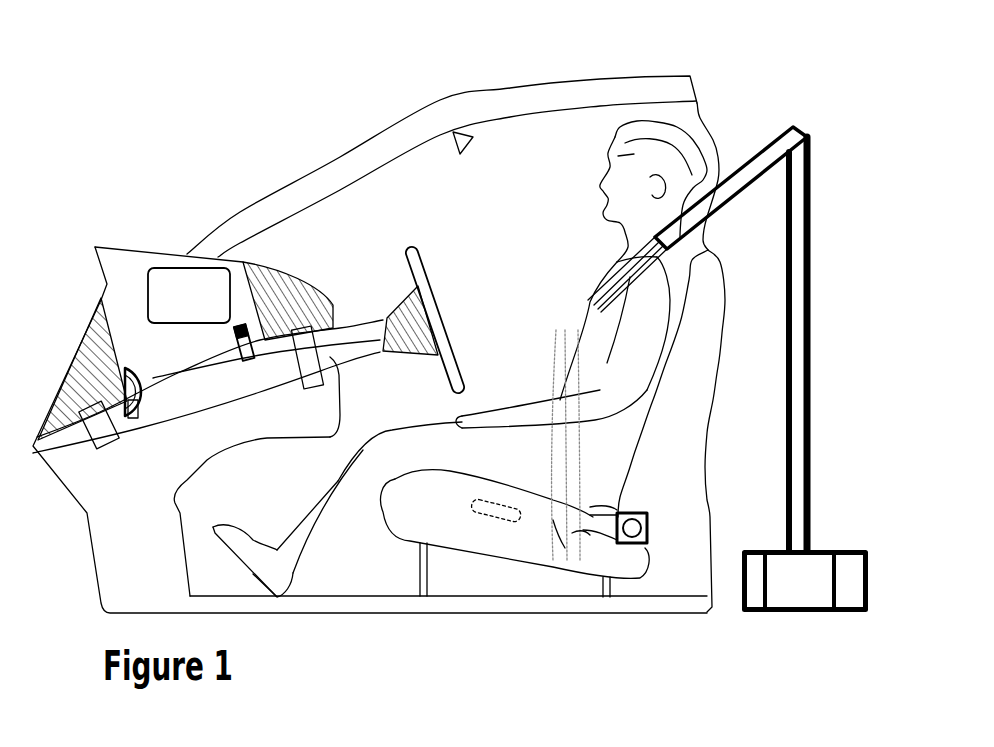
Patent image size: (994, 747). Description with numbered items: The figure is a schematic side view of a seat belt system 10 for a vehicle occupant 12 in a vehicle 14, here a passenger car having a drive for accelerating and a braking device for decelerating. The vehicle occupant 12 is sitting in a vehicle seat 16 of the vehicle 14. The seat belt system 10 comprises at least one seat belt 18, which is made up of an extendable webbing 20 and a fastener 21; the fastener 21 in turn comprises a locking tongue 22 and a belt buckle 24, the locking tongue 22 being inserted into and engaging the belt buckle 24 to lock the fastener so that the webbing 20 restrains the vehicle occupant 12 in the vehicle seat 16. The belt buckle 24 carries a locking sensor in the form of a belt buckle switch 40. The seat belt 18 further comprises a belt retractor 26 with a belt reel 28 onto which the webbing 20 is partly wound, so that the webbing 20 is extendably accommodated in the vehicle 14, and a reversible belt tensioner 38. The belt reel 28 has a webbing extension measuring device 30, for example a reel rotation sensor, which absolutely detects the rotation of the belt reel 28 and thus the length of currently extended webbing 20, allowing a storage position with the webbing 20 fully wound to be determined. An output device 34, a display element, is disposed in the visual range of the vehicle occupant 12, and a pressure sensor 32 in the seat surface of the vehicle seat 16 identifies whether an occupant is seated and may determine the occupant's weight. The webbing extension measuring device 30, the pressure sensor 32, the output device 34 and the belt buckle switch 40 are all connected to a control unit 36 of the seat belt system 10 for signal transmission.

The seat belt system 10 is at (792, 106).
The vehicle occupant 12 is at (597, 256).
The vehicle 14 is at (218, 206).
The vehicle seat 16 is at (441, 565).
The seat belt 18 is at (535, 546).
The webbing 20 is at (556, 392).
The fastener 21 is at (558, 562).
The locking tongue 22 is at (657, 553).
The belt buckle 24 is at (620, 512).
The belt retractor 26 is at (823, 536).
The belt reel 28 is at (797, 593).
The webbing extension measuring device 30 is at (860, 593).
The pressure sensor 32 is at (487, 518).
The output device 34 is at (458, 128).
The control unit 36 is at (180, 293).
The reversible belt tensioner 38 is at (753, 600).
The belt buckle switch 40 is at (572, 533).